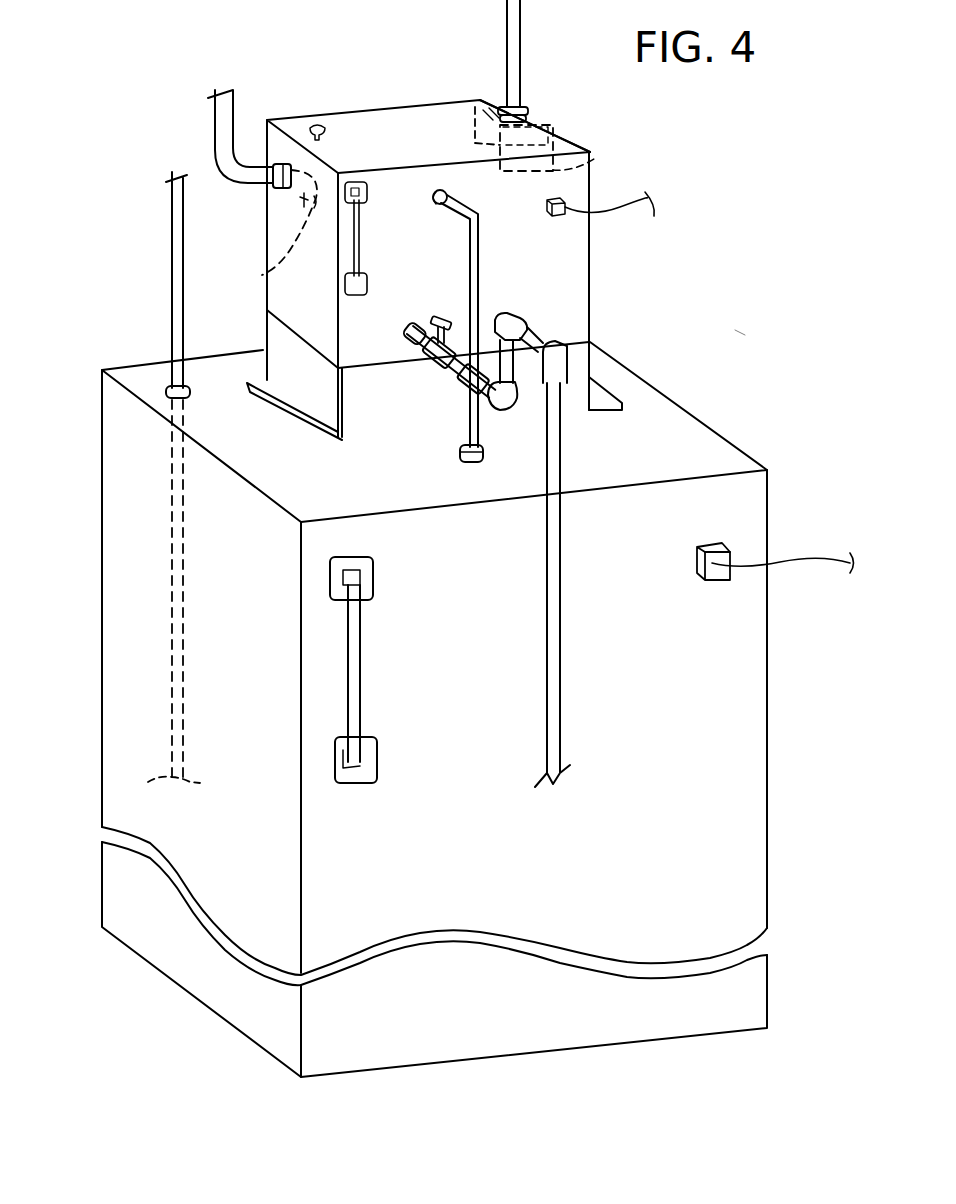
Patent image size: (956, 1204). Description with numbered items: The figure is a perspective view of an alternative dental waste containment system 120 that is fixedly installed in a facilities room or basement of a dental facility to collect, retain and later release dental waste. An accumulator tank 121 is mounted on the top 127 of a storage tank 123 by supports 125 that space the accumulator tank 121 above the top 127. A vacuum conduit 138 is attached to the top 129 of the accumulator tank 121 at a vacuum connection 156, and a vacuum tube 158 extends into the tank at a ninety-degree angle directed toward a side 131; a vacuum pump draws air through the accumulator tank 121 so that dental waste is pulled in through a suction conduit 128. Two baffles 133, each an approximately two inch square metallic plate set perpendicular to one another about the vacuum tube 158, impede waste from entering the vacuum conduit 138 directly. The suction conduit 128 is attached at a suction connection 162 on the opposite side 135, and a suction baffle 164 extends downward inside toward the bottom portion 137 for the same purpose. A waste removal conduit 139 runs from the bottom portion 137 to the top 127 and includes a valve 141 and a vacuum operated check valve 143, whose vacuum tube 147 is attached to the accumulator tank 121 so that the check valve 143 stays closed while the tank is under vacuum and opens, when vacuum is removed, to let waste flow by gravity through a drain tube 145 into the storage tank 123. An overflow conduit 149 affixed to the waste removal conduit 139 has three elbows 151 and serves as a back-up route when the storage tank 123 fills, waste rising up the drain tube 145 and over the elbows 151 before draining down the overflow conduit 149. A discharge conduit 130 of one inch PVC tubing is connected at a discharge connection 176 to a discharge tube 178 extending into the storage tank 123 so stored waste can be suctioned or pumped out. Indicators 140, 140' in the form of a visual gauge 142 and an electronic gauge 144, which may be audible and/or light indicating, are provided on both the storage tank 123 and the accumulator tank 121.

The dental waste containment system 120 is at (740, 332).
The accumulator tank 121 is at (594, 270).
The storage tank 123 is at (772, 692).
The supports 125 is at (313, 397).
The top 127 is at (700, 438).
The suction conduit 128 is at (230, 107).
The top 129 is at (377, 133).
The discharge conduit 130 is at (174, 248).
The side 131 is at (592, 175).
The baffles 133 is at (475, 143).
The side 135 is at (293, 307).
The bottom portion 137 is at (363, 355).
The vacuum conduit 138 is at (522, 40).
The waste removal conduit 139 is at (440, 368).
The indicator 140 is at (393, 677).
The sensor unit 140' is at (776, 526).
The valve 141 is at (440, 320).
The visual gauge 142 is at (375, 610).
The vacuum operated check valve 143 is at (467, 386).
The electronic gauge 144 is at (722, 583).
The drain tube 145 is at (480, 432).
The vacuum tube 147 is at (478, 275).
The overflow conduit 149 is at (553, 660).
The elbows 151 is at (522, 388).
The vacuum connection 156 is at (496, 108).
The vacuum tube 158 is at (567, 128).
The suction connection 162 is at (292, 183).
The suction baffle 164 is at (262, 274).
The discharge connection 176 is at (168, 390).
The discharge tube 178 is at (170, 510).